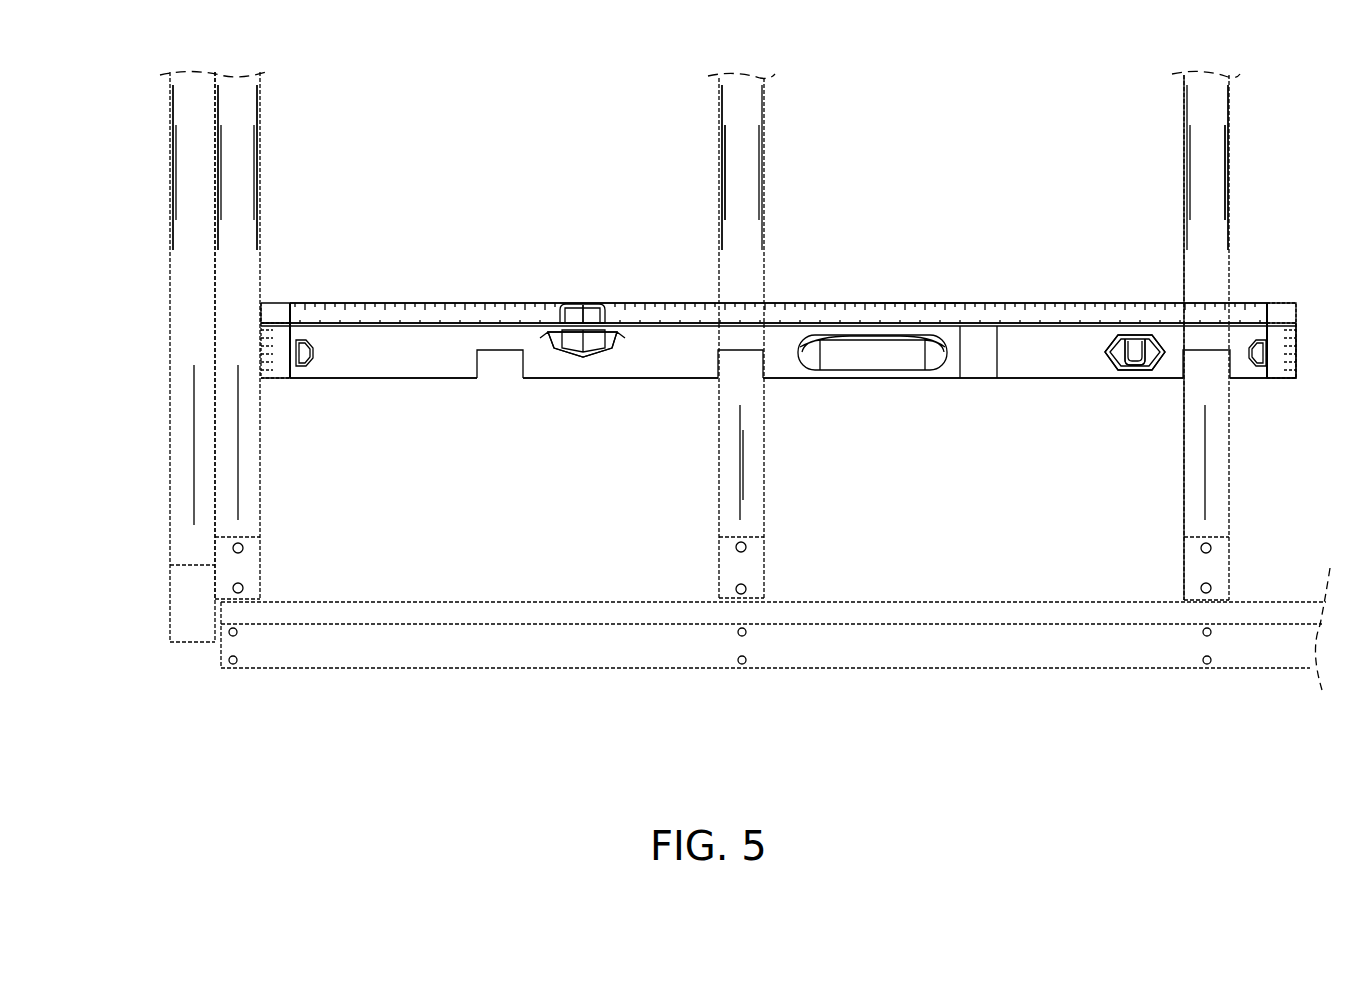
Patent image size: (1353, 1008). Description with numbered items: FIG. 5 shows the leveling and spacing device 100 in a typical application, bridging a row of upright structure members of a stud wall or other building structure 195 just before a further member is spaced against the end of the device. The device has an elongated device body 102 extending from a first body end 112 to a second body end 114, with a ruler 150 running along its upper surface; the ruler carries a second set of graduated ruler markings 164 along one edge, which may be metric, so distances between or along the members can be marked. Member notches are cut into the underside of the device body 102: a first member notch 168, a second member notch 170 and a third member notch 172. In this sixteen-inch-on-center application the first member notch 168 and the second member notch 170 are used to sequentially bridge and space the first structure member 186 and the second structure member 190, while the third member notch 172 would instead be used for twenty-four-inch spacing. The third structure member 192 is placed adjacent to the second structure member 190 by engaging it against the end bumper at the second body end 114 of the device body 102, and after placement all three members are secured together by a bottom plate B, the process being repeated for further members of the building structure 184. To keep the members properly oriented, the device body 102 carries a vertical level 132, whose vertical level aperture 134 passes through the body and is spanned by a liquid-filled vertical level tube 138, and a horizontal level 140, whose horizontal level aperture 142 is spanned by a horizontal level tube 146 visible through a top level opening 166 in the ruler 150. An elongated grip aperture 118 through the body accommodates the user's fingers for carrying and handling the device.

The leveling and spacing device 100 is at (456, 212).
The device body 102 is at (432, 382).
The first body end 112 is at (1275, 368).
The second body end 114 is at (272, 325).
The grip aperture 118 is at (900, 370).
The vertical level 132 is at (1140, 333).
The vertical level aperture 134 is at (1110, 358).
The vertical level tube 138 is at (1115, 333).
The horizontal level 140 is at (538, 342).
The horizontal level aperture 142 is at (597, 352).
The horizontal level tube 146 is at (585, 303).
The ruler 150 is at (1000, 298).
The second set of graduated ruler markings 164 is at (920, 303).
The top level opening 166 is at (567, 303).
The first member notch 168 is at (1207, 357).
The second member notch 170 is at (741, 357).
The third member notch 172 is at (502, 380).
The building structure 184 is at (1243, 123).
The first structure member 186 is at (1182, 92).
The second structure member 190 is at (766, 155).
The third structure member 192 is at (262, 98).
The building structure 195 is at (163, 125).
The bottom plate B is at (320, 672).